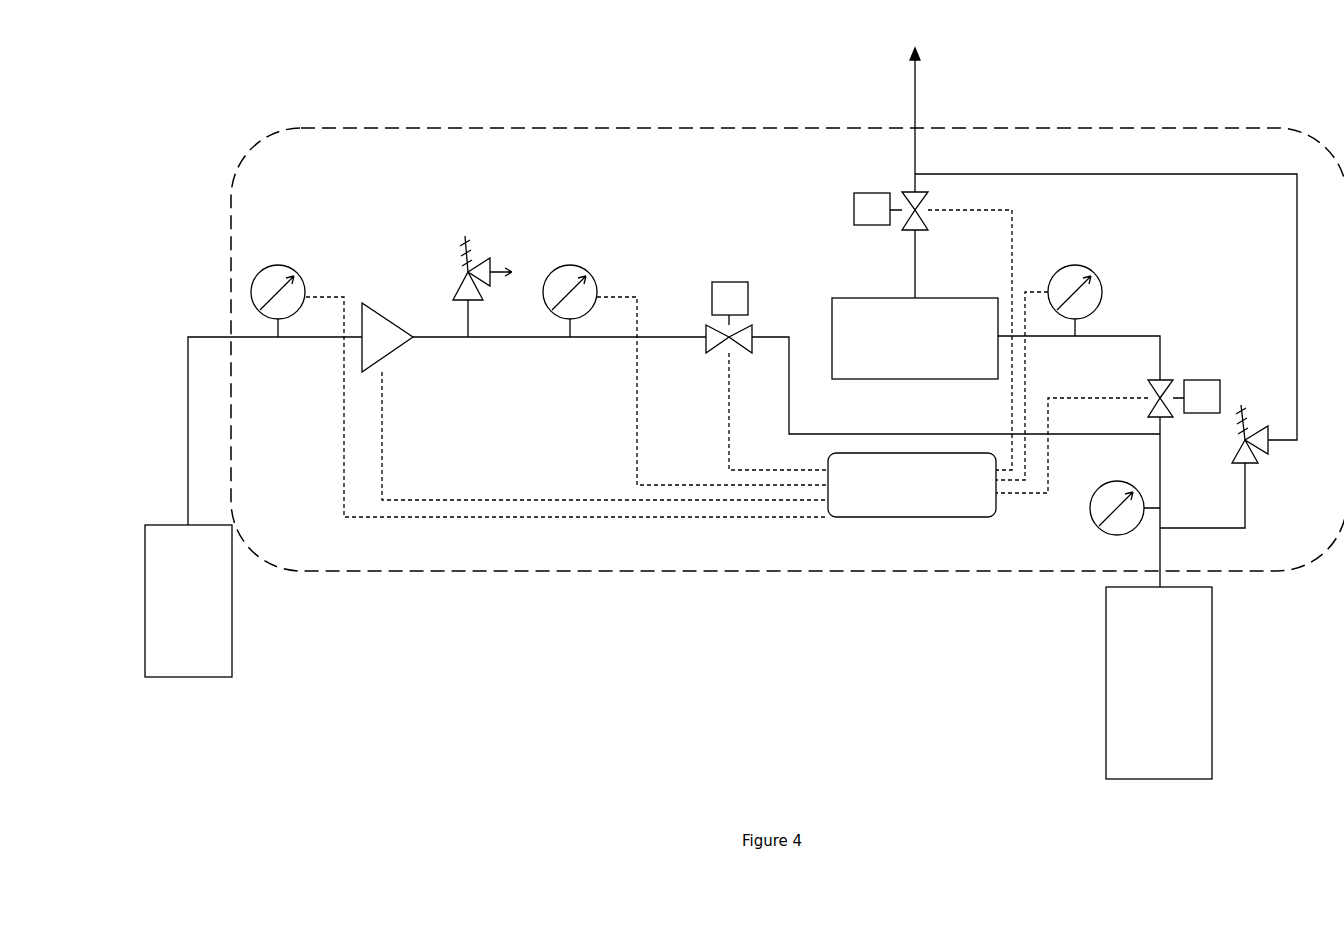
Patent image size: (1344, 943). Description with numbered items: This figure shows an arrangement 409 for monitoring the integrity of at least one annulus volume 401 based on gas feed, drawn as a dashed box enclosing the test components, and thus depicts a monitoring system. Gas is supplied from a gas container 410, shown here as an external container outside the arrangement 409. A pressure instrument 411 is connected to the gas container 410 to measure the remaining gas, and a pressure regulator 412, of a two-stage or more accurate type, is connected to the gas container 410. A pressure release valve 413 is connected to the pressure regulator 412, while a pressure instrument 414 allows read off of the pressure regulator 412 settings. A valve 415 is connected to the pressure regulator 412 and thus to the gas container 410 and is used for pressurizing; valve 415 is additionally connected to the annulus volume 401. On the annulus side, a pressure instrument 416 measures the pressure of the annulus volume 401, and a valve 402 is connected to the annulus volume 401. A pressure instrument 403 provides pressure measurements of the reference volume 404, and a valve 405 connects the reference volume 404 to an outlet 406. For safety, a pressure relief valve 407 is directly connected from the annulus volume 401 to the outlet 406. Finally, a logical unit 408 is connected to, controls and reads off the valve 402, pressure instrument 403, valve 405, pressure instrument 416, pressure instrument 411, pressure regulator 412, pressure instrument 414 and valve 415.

The annulus volume 401 is at (1159, 683).
The valve 402 is at (1108, 425).
The pressure instrument 403 is at (1049, 361).
The reference volume 404 is at (915, 338).
The valve 405 is at (933, 320).
The outlet 406 is at (958, 115).
The pressure relief valve 407 is at (1254, 424).
The logical unit 408 is at (912, 485).
The arrangement 409 is at (787, 335).
The gas container 410 is at (188, 601).
The pressure instrument 411 is at (539, 376).
The pressure regulator 412 is at (595, 395).
The pressure release valve 413 is at (482, 270).
The pressure instrument 414 is at (685, 360).
The valve 415 is at (767, 361).
The pressure instrument 416 is at (1117, 497).